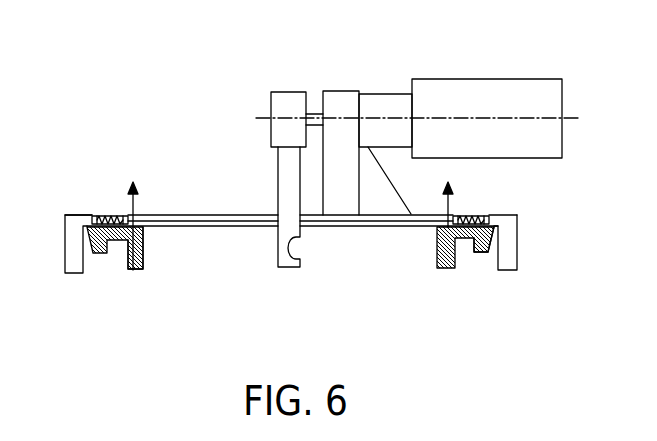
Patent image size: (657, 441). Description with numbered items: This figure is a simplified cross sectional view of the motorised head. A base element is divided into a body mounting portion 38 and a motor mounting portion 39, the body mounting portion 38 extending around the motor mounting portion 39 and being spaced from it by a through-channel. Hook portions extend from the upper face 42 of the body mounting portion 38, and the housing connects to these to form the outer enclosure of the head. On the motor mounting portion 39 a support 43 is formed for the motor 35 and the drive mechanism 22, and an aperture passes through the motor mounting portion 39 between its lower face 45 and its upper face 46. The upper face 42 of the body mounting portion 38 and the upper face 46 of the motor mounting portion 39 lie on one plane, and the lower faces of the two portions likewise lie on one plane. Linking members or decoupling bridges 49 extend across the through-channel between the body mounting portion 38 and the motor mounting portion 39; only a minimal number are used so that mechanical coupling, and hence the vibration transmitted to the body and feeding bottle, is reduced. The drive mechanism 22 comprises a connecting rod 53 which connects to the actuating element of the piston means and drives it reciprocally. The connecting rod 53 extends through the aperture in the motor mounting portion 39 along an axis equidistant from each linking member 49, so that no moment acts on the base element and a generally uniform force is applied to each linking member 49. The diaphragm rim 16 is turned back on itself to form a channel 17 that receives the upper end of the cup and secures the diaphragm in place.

The rim 16 is at (102, 252).
The channel 17 is at (467, 244).
The drive mechanism 22 is at (289, 96).
The motor 35 is at (489, 95).
The body mounting portion 38 is at (72, 253).
The motor mounting portion 39 is at (372, 227).
The upper face 42 is at (78, 215).
The support 43 is at (341, 96).
The lower face 45 is at (208, 228).
The upper face 46 is at (193, 215).
The linking member 49 is at (471, 220).
The connecting rod 53 is at (288, 263).